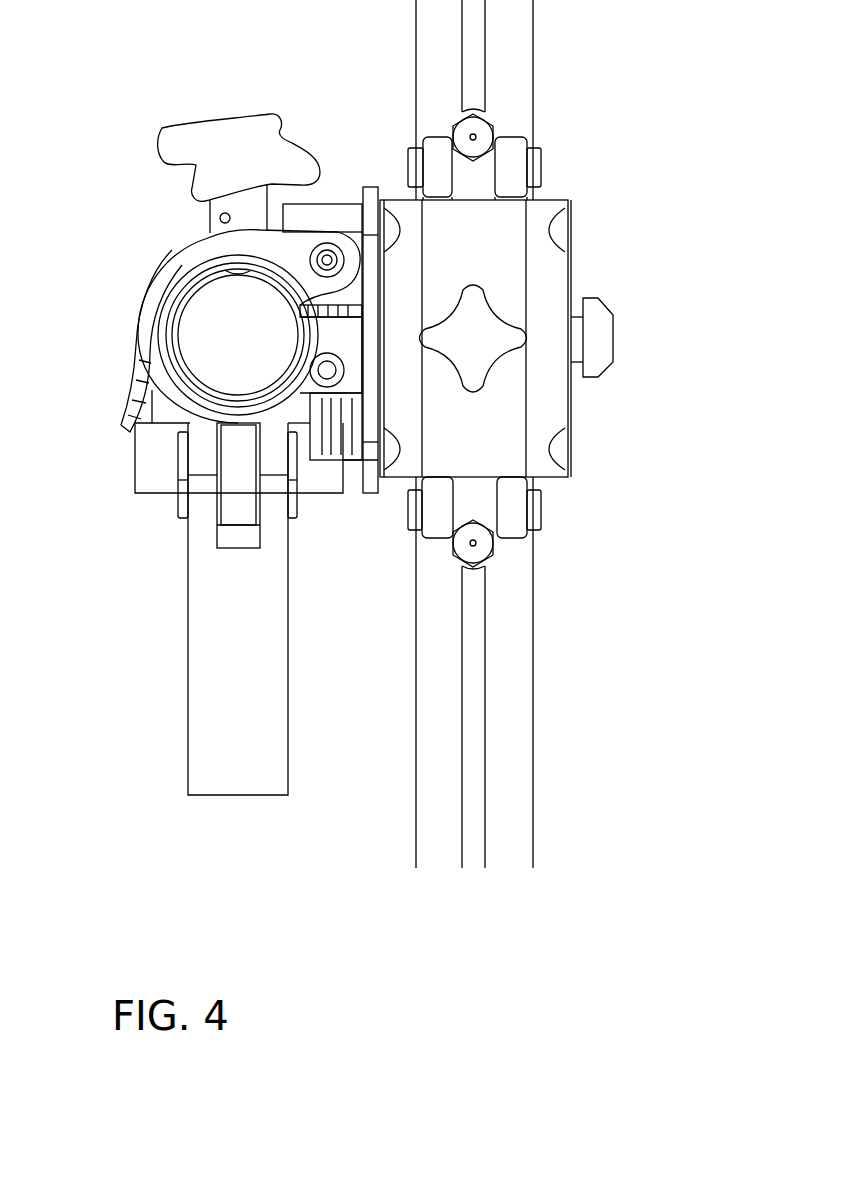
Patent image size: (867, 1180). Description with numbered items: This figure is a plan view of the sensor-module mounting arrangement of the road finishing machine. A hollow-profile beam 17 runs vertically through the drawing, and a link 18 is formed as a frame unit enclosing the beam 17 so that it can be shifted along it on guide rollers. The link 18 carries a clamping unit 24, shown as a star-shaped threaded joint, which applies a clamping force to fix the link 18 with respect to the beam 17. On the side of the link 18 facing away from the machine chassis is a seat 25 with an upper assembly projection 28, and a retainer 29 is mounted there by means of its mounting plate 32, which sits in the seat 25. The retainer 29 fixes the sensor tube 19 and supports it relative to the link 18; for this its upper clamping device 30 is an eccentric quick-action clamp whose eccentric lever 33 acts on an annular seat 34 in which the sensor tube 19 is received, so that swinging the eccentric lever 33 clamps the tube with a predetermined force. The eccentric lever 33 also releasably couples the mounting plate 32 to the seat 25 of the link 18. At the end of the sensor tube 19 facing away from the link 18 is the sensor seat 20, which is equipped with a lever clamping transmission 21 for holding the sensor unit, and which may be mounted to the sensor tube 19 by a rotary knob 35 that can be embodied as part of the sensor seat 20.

The beam 17 is at (534, 24).
The link 18 is at (588, 230).
The sensor tube 19 is at (178, 345).
The sensor seat 20 is at (153, 538).
The lever clamping transmission 21 is at (188, 688).
The clamping unit 24 is at (502, 360).
The seat 25 is at (394, 192).
The upper assembly projection 28 is at (613, 330).
The retainer 29 is at (338, 190).
The upper clamping device 30 is at (157, 251).
The mounting plate 32 is at (366, 494).
The eccentric lever 33 is at (150, 273).
The annular seat 34 is at (160, 307).
The rotary knob 35 is at (210, 120).